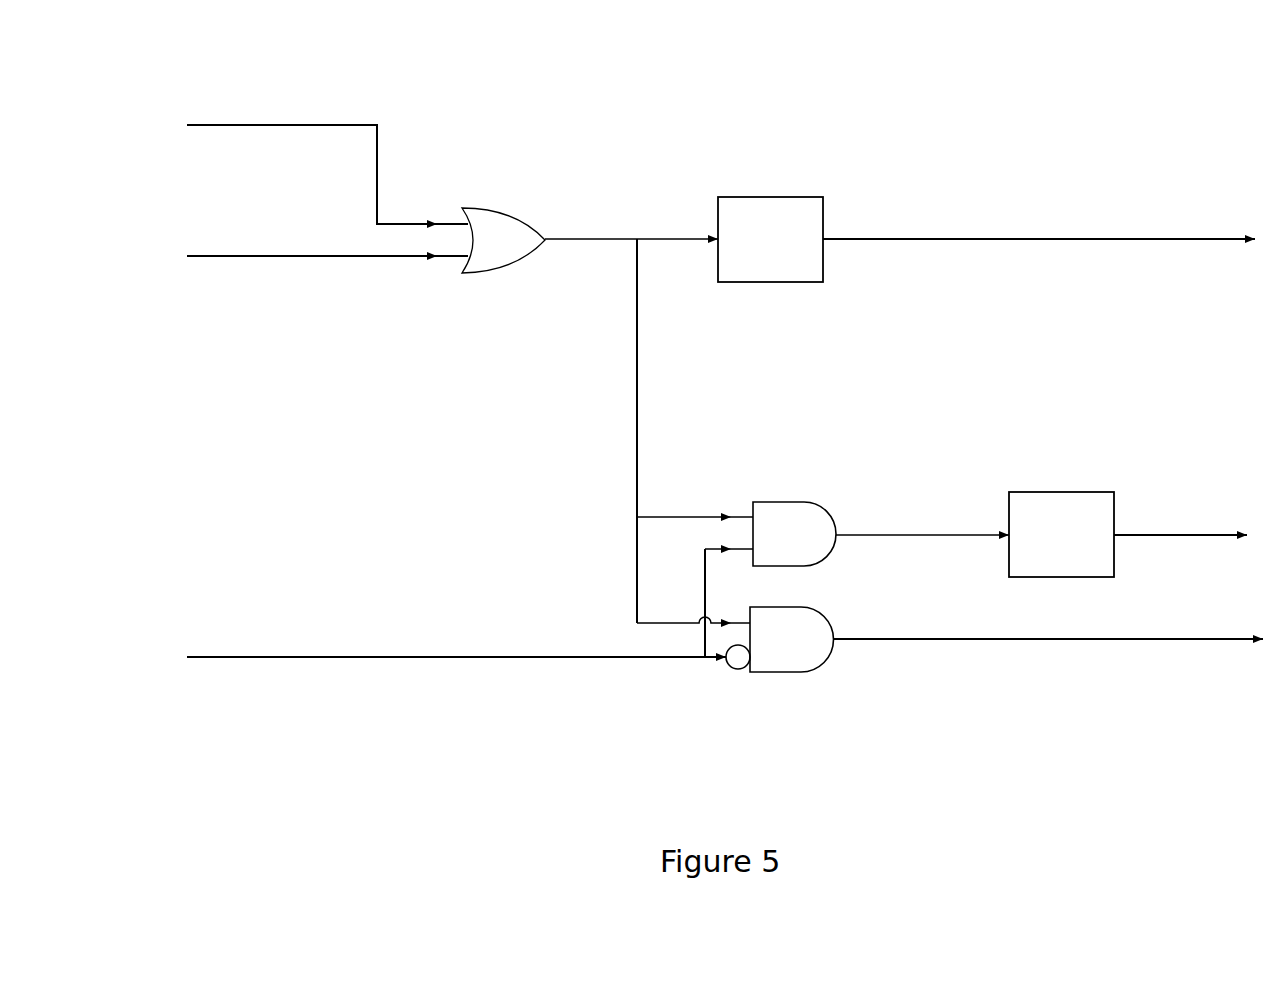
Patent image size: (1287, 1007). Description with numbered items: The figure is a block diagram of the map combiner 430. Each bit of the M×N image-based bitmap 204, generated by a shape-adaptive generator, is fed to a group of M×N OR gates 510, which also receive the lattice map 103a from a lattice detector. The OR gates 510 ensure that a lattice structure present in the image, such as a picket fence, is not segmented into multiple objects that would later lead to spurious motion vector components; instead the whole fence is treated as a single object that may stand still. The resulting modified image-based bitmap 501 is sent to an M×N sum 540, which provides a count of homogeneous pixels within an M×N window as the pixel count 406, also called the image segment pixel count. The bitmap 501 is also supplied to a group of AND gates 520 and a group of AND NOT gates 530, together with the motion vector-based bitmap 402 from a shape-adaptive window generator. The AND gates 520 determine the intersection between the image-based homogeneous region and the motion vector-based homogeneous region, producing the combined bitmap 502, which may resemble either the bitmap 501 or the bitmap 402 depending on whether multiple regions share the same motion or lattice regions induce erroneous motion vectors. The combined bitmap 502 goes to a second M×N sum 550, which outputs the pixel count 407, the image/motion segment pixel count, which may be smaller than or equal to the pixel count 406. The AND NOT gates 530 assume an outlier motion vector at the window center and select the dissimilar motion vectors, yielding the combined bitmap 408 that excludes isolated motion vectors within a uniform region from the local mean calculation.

The map combiner 430 is at (293, 53).
The lattice map 103a is at (293, 127).
The M×N image-based bitmap 204 is at (272, 256).
The M×N OR gates 510 is at (486, 255).
The modified image-based bitmap 501 is at (612, 238).
The M×N sum 540 is at (752, 274).
The pixel count 406 is at (1025, 238).
The AND gates 520 is at (768, 548).
The combined bitmap 502 is at (908, 532).
The M×N sum 550 is at (1044, 573).
The pixel count 407 is at (1184, 533).
The AND NOT gates 530 is at (767, 650).
The combined bitmap 408 is at (1127, 639).
The motion vector-based bitmap 402 is at (292, 657).